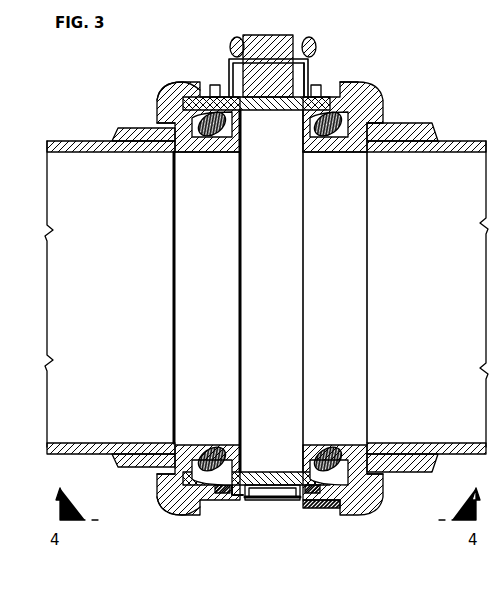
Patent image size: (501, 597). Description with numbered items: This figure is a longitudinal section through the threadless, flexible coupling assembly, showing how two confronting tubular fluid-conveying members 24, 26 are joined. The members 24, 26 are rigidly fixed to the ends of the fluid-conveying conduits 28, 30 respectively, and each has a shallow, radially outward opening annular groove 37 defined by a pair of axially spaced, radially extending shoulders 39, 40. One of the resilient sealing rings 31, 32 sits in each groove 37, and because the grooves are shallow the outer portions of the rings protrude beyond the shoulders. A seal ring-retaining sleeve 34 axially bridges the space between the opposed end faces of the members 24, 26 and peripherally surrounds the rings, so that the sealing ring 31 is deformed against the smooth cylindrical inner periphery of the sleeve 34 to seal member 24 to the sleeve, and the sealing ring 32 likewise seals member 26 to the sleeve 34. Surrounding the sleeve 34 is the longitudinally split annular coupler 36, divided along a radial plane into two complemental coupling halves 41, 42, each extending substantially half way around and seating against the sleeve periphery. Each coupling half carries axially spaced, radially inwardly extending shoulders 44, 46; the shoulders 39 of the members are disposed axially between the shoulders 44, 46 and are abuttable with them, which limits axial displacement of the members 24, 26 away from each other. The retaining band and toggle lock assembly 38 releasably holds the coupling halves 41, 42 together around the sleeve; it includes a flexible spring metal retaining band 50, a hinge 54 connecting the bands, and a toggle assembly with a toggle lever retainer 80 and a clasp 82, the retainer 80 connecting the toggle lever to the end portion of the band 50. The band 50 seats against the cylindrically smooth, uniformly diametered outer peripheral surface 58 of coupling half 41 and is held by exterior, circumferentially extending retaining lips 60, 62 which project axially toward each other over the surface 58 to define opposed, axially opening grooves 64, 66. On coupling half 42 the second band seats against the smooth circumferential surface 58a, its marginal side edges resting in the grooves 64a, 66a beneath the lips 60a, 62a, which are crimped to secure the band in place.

The fluid-conveying member 24 is at (124, 128).
The fluid-conveying member 26 is at (415, 123).
The fluid-conveying conduit 28 is at (68, 141).
The fluid-conveying conduit 30 is at (460, 141).
The sealing ring 31 is at (207, 155).
The sealing ring 32 is at (335, 157).
The seal ring-retaining sleeve 34 is at (266, 112).
The longitudinally split annular coupler 36 is at (404, 87).
The annular groove 37 is at (200, 508).
The retaining band and toggle lock assembly 38 is at (280, 24).
The shoulder 39 is at (165, 500).
The shoulder 40 is at (300, 472).
The coupling half 41 is at (380, 505).
The coupling half 42 is at (360, 82).
The shoulder 44 is at (202, 134).
The shoulder 46 is at (340, 134).
The retaining band 50 is at (242, 485).
The hinge 54 is at (242, 497).
The outer peripheral surface 58 is at (296, 500).
The circumferentially extending surface 58a is at (283, 110).
The retaining lip 60 is at (200, 512).
The retaining lip 60a is at (190, 82).
The retaining lip 62 is at (332, 508).
The retaining lip 62a is at (342, 82).
The groove 64 is at (222, 494).
The groove 64a is at (232, 56).
The groove 66 is at (314, 494).
The groove 66a is at (318, 85).
The toggle lever retainer 80 is at (310, 63).
The clasp 82 is at (312, 60).